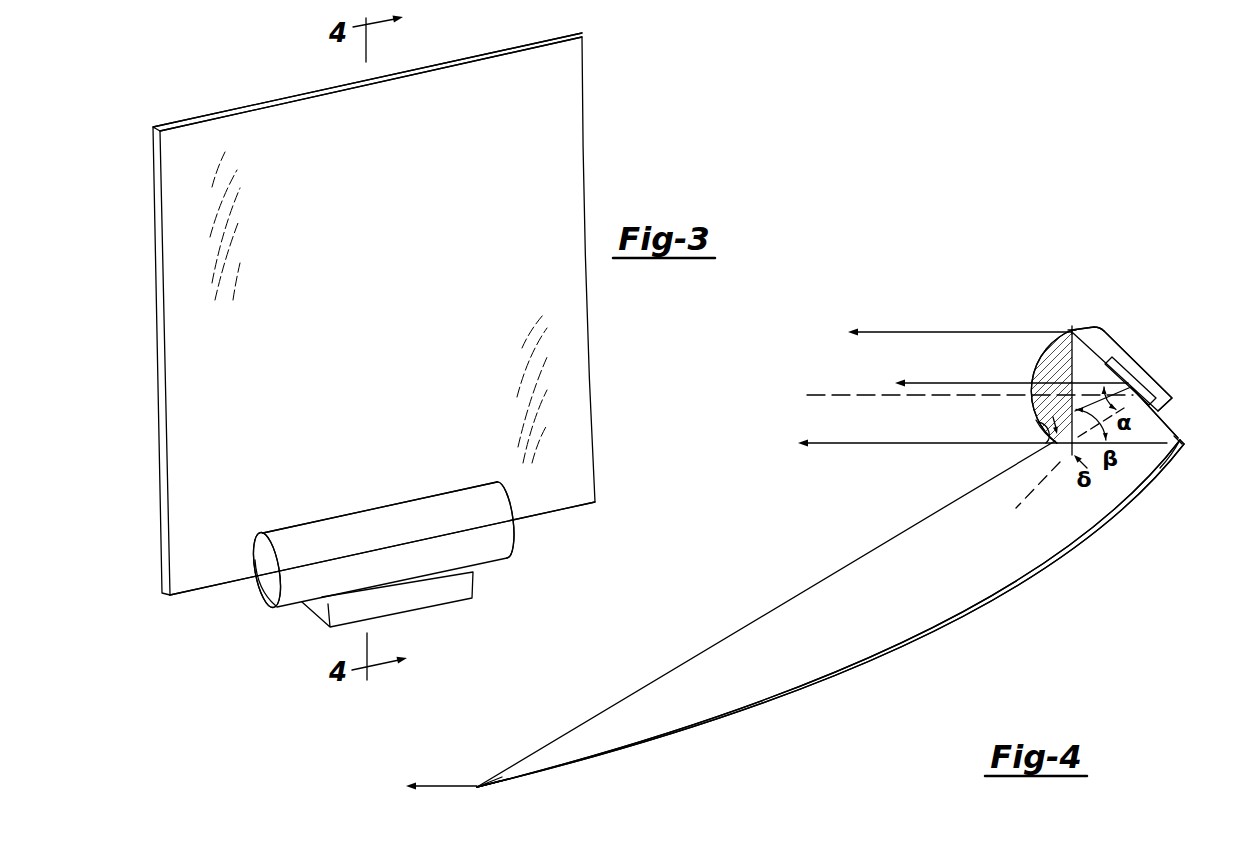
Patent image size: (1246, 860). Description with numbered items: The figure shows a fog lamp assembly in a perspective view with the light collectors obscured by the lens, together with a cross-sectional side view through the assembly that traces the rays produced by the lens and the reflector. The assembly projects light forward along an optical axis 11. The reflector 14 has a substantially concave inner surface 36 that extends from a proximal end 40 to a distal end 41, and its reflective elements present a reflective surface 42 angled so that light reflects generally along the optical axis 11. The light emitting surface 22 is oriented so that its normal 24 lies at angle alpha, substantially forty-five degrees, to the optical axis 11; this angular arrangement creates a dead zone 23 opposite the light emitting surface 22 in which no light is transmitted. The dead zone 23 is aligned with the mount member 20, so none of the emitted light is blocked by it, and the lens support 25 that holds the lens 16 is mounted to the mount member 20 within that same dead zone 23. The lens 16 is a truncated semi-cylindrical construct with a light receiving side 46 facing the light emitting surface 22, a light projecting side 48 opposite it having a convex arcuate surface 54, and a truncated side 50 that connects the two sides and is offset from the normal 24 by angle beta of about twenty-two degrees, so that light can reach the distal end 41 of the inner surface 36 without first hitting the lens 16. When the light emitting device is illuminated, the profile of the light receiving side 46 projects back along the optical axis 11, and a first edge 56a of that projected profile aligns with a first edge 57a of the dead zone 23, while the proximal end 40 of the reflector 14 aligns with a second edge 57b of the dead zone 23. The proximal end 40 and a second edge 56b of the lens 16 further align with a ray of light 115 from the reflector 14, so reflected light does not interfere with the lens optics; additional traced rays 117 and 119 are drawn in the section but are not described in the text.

In FIG. 4, the optical axis 11 is at (825, 393).
In FIG. 3, the reflector 14 is at (143, 205).
In FIG. 4, the reflector 14 is at (799, 695).
In FIG. 3, the lens 16 is at (298, 512).
In FIG. 4, the lens 16 is at (1032, 352).
In FIG. 3, the mount member 20 is at (458, 614).
In FIG. 4, the mount member 20 is at (1151, 359).
In FIG. 4, the light emitting surface 22 is at (1160, 418).
In FIG. 4, the dead zone 23 is at (1128, 338).
In FIG. 4, the normal 24 is at (1012, 507).
In FIG. 4, the lens support 25 is at (1167, 374).
In FIG. 3, the inner surface 36 is at (355, 338).
In FIG. 4, the inner surface 36 is at (697, 720).
In FIG. 3, the proximal end 40 is at (553, 512).
In FIG. 4, the proximal end 40 is at (1188, 452).
In FIG. 3, the distal end 41 is at (218, 110).
In FIG. 4, the distal end 41 is at (475, 784).
In FIG. 4, the reflective surface 42 is at (906, 640).
In FIG. 3, the light receiving side 46 is at (268, 597).
In FIG. 4, the light receiving side 46 is at (1099, 330).
In FIG. 3, the light projecting side 48 is at (372, 525).
In FIG. 4, the light projecting side 48 is at (1033, 377).
In FIG. 3, the truncated side 50 is at (261, 535).
In FIG. 4, the truncated side 50 is at (1052, 449).
In FIG. 3, the arcuate surface 54 is at (428, 532).
In FIG. 4, the first edge 56a is at (1070, 328).
In FIG. 4, the second edge 56b is at (1040, 427).
In FIG. 4, the first edge of the dead zone 57a is at (1072, 328).
In FIG. 4, the second edge of the dead zone 57b is at (1180, 441).
In FIG. 4, the ray of light 115 is at (827, 446).
In FIG. 4, the edge light ray 117 is at (460, 791).
In FIG. 4, the upper light ray 119 is at (878, 330).